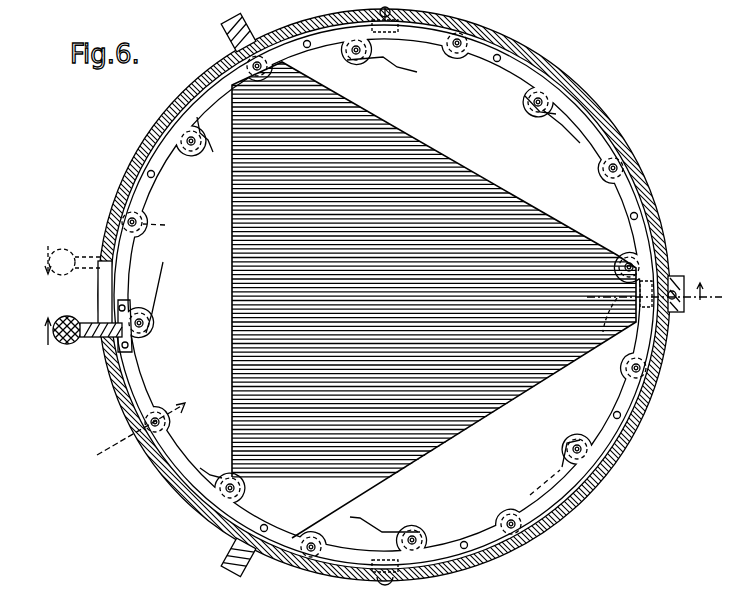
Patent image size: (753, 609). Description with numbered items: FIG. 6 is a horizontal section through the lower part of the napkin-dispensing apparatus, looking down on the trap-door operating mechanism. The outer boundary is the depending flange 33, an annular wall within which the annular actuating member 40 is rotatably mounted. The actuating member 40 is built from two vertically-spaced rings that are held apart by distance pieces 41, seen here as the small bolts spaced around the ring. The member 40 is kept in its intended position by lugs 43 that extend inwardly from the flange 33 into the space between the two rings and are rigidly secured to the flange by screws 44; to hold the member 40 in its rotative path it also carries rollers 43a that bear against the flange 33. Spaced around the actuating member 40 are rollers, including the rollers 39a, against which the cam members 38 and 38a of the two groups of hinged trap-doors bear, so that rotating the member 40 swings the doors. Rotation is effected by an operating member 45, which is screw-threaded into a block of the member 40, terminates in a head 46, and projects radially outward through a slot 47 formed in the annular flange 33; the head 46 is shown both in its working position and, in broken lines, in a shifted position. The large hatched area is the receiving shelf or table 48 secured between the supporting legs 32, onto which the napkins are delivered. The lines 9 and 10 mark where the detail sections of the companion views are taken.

The section line 9— 9 is at (146, 430).
The section line 10— 10 is at (653, 307).
The supporting legs 32 is at (233, 40).
The depending flange 33 is at (621, 446).
The cam members 38 is at (201, 151).
The cam members 38a is at (398, 70).
The rollers 39a is at (528, 103).
The annular actuating member 40 is at (144, 383).
The distance pieces 41 is at (308, 47).
The lugs 43 is at (352, 583).
The rollers 43a is at (513, 515).
The screws 44 is at (673, 292).
The operating member 45 is at (100, 340).
The head 46 is at (67, 345).
The slot 47 is at (105, 294).
The receiving shelf or table 48 is at (487, 183).